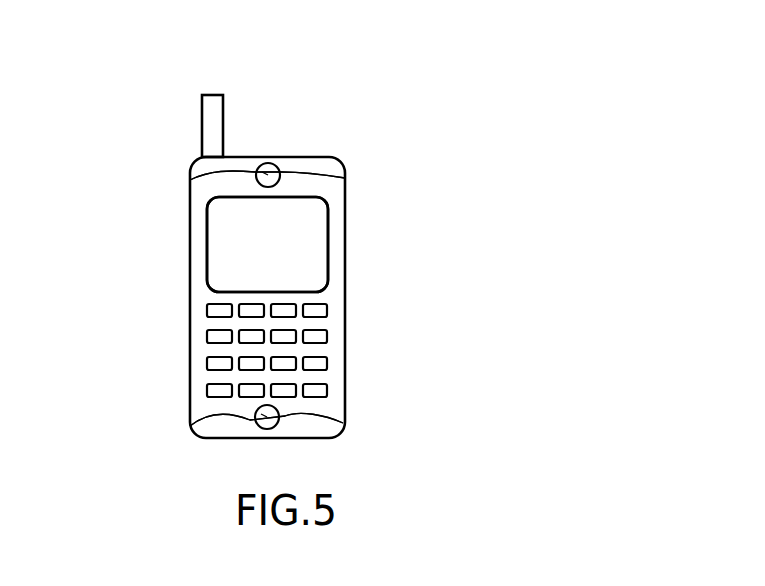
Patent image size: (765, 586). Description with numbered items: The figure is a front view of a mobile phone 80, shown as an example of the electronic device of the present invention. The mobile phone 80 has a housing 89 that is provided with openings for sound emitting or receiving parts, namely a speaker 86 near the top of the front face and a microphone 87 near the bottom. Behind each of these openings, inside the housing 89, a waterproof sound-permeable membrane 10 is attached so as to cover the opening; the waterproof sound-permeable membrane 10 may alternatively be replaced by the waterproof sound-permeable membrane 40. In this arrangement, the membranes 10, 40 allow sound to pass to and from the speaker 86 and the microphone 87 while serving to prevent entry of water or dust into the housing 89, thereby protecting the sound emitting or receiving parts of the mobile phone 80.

The mobile phone 80 is at (369, 112).
The speaker 86 is at (345, 178).
The microphone 87 is at (343, 423).
The housing 89 is at (333, 256).
The waterproof sound-permeable membrane 10 is at (190, 180).
The waterproof sound-permeable membrane 40 is at (267, 298).